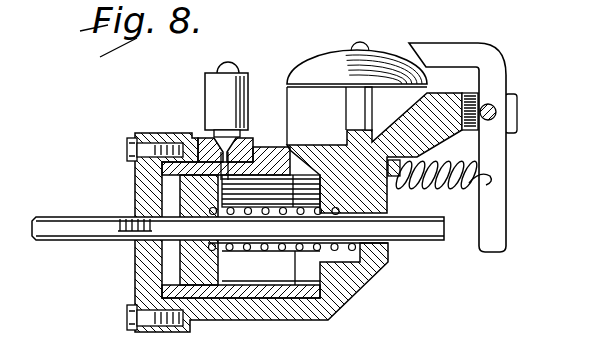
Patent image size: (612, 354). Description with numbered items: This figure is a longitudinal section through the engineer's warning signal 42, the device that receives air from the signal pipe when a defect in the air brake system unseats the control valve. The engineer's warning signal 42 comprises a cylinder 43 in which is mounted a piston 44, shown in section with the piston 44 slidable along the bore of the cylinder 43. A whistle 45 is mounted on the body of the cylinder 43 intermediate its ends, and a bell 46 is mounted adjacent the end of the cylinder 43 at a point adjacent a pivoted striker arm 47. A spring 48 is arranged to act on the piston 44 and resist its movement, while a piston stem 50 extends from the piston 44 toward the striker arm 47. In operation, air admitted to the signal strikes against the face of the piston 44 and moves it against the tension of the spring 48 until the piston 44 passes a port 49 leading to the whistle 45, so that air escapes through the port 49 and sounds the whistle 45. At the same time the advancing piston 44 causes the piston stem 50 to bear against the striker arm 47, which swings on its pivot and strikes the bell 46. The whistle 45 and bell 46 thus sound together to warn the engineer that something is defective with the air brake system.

The engineer's warning signal 42 is at (281, 143).
The cylinder 43 is at (260, 160).
The piston 44 is at (177, 254).
The whistle 45 is at (207, 99).
The bell 46 is at (378, 51).
The striker arm 47 is at (501, 77).
The spring 48 is at (417, 183).
The port 49 is at (205, 138).
The piston stem 50 is at (409, 240).